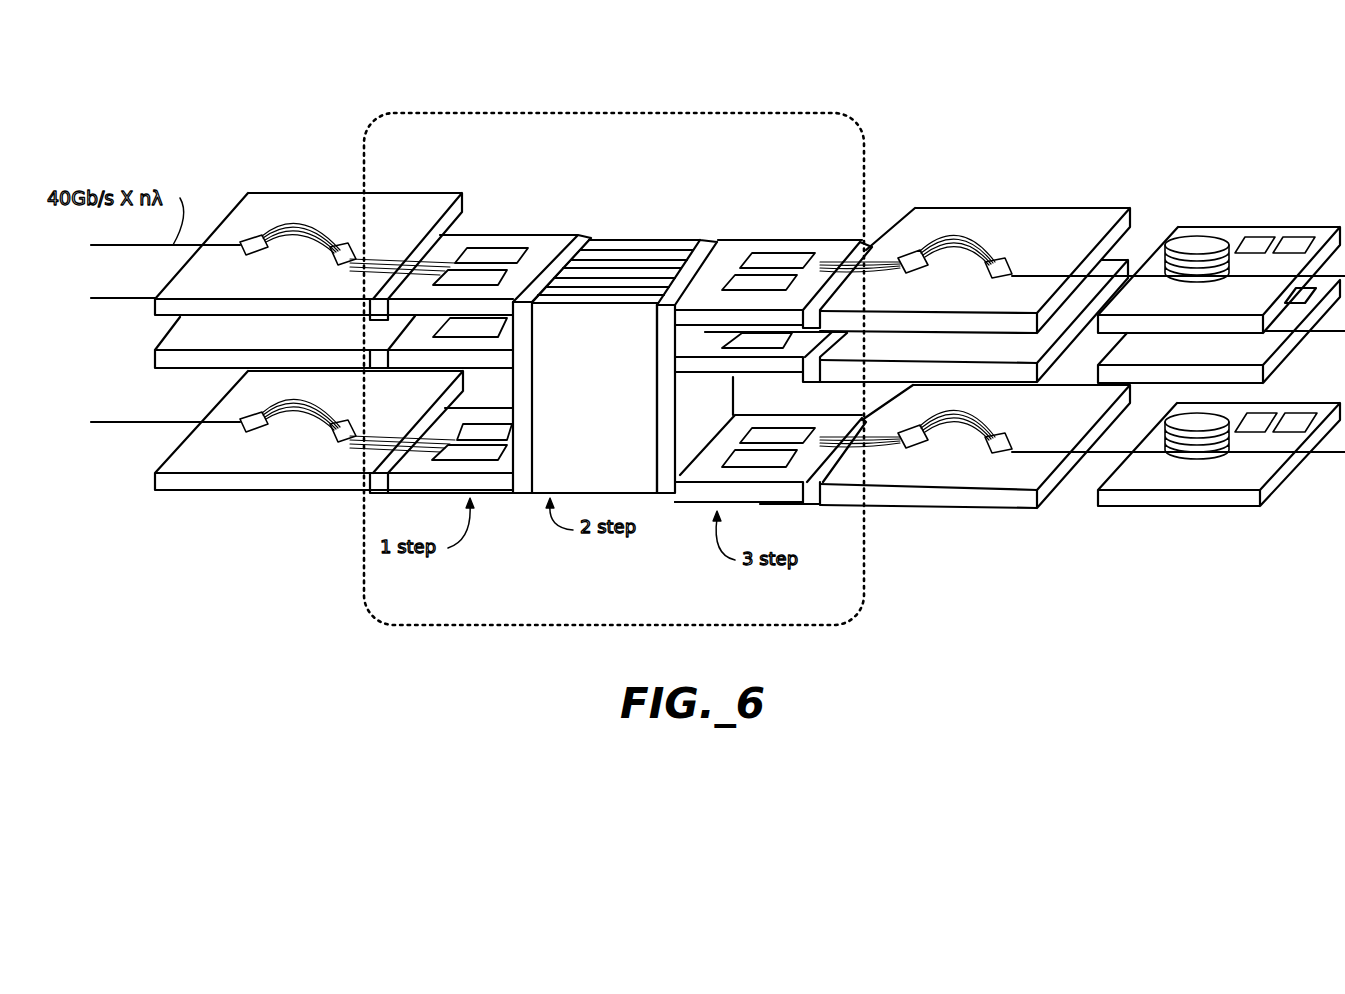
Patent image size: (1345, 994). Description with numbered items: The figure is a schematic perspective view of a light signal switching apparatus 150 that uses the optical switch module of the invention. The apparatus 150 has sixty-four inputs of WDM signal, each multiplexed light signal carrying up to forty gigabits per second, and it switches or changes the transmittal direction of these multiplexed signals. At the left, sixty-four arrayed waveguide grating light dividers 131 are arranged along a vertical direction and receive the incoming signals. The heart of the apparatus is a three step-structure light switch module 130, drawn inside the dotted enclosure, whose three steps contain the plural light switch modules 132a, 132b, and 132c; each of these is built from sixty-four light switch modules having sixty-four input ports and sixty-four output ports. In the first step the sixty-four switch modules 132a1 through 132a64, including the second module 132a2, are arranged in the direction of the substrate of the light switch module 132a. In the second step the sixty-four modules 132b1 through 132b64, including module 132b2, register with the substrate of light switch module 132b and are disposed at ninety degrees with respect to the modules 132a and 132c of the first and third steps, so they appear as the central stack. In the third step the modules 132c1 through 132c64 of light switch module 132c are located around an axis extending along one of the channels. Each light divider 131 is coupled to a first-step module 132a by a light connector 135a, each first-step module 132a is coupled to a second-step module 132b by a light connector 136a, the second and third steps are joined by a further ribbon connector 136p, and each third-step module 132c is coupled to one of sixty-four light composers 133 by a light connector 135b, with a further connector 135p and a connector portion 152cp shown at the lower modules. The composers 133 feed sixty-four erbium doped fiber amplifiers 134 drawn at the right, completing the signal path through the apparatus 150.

The three step-structure light switch module 130 is at (603, 627).
The arrayed waveguide grating light divider 131 is at (305, 190).
The light switch module of the first step 132a is at (543, 230).
The first-step switch module 132a1 is at (480, 228).
The first-step switch module 132a2 is at (487, 370).
The first-step switch module 132a64 is at (500, 495).
The light switch module of the second step 132b is at (660, 228).
The second-step switch module 132b1 is at (623, 238).
The second-step switch module 132b2 is at (698, 375).
The second-step switch module 132b64 is at (537, 495).
The light switch module of the third step 132c is at (783, 235).
The third-step switch module 132c1 is at (763, 236).
The third-step switch module 132c64 is at (787, 502).
The light composer 133 is at (1042, 208).
The erbium doped fiber amplifier 134 is at (1245, 227).
The light connector 135a is at (375, 494).
The light connector 135b is at (865, 250).
The fiber connector p 135p is at (813, 506).
The light connector 136a is at (580, 238).
The optical fiber ribbon p 136p is at (733, 238).
The light signal switching apparatus 150 is at (816, 657).
The connector plate 152cp is at (698, 500).